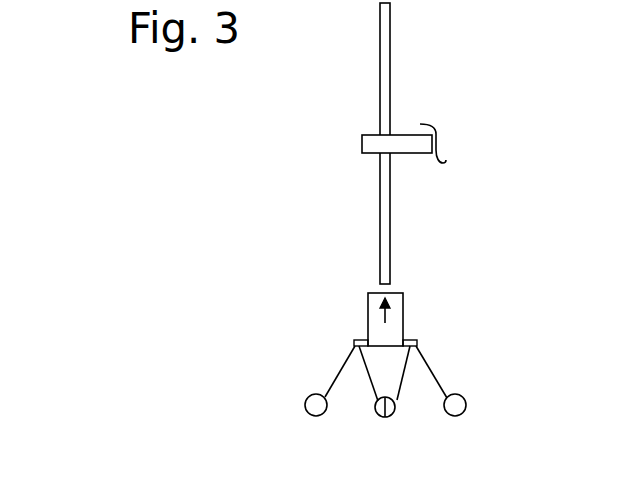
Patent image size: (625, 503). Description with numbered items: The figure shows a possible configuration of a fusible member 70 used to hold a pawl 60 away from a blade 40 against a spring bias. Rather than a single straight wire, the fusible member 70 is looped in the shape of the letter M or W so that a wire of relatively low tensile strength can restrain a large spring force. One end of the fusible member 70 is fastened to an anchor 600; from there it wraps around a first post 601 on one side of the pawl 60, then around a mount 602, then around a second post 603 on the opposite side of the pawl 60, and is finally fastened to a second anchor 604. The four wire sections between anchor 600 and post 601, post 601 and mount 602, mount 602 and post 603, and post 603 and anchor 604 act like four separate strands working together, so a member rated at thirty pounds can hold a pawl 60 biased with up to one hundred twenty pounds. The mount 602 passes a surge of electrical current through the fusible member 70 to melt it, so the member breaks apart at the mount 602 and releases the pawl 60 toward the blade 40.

The blade 40 is at (390, 76).
The pawl 60 is at (398, 303).
The fusible member 70 is at (448, 368).
The anchor 600 is at (311, 414).
The first post 601 is at (356, 340).
The mount 602 is at (396, 408).
The second post 603 is at (418, 340).
The second anchor 604 is at (460, 414).